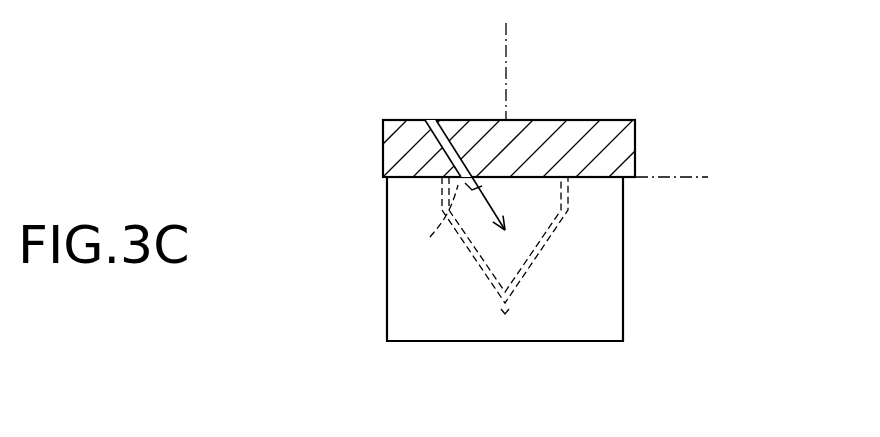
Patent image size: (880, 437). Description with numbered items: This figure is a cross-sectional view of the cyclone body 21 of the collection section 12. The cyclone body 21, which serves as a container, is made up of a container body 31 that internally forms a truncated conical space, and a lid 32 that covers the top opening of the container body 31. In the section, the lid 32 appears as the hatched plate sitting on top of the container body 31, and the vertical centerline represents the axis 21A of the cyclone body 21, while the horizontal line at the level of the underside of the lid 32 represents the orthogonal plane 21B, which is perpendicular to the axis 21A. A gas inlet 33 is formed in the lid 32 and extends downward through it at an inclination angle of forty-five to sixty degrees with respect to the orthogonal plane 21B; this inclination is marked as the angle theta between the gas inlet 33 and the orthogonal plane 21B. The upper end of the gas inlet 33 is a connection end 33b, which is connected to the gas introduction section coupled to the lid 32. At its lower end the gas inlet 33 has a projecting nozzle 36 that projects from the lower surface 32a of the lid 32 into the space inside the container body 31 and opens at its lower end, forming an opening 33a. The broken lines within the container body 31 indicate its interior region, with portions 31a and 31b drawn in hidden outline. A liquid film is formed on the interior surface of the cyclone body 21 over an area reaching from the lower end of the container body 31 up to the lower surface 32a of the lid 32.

The collection section 12 is at (533, 193).
The cyclone body 21 is at (623, 302).
The axis 21A is at (507, 45).
The orthogonal plane 21B is at (683, 177).
The container body 31 is at (565, 296).
The groove bottom 31a is at (495, 303).
The groove side wall 31b is at (552, 220).
The lid 32 is at (608, 118).
The lower surface 32a is at (592, 178).
The gas inlet 33 is at (443, 179).
The opening 33a is at (458, 185).
The connection end 33b is at (432, 118).
The projecting nozzle 36 is at (433, 227).